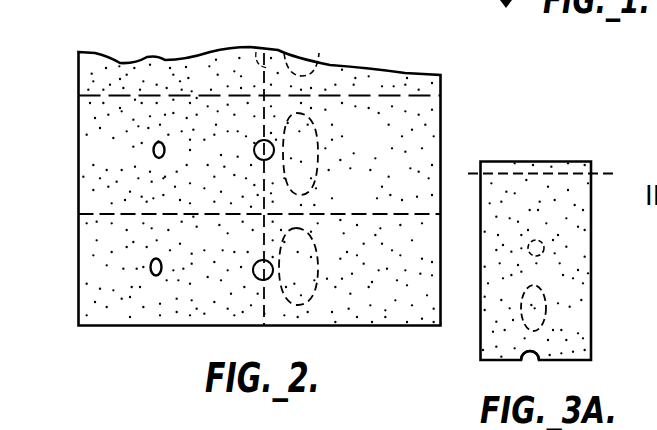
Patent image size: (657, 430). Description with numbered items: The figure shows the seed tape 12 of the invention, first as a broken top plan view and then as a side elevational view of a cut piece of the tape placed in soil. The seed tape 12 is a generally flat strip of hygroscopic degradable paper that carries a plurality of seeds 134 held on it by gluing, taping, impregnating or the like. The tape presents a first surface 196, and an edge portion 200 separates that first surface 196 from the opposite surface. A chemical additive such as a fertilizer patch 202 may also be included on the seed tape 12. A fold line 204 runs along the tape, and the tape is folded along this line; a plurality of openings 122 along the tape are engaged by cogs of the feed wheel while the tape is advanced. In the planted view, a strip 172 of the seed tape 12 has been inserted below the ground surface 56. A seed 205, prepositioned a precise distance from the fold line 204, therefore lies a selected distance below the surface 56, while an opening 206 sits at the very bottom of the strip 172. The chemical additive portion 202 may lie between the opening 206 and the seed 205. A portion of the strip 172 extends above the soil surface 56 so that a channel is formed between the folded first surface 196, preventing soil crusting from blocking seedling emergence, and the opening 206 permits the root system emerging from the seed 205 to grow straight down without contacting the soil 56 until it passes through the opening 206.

In FIG. 2, the seed tape 12 is at (149, 40).
In FIG. 2, the seeds 134 is at (125, 150).
In FIG. 2, the first surface 196 is at (97, 277).
In FIG. 2, the edge portion 200 is at (372, 328).
In FIG. 2, the fertilizer patch 202 is at (318, 133).
In FIG. 3A, the fertilizer patch 202 is at (546, 300).
In FIG. 2, the fold line 204 is at (256, 50).
In FIG. 2, the openings 122 is at (271, 167).
In FIG. 3A, the ground surface 56 is at (601, 173).
In FIG. 3A, the seed 205 is at (544, 248).
In FIG. 3A, the strip 172 is at (578, 322).
In FIG. 3A, the opening 206 is at (530, 362).